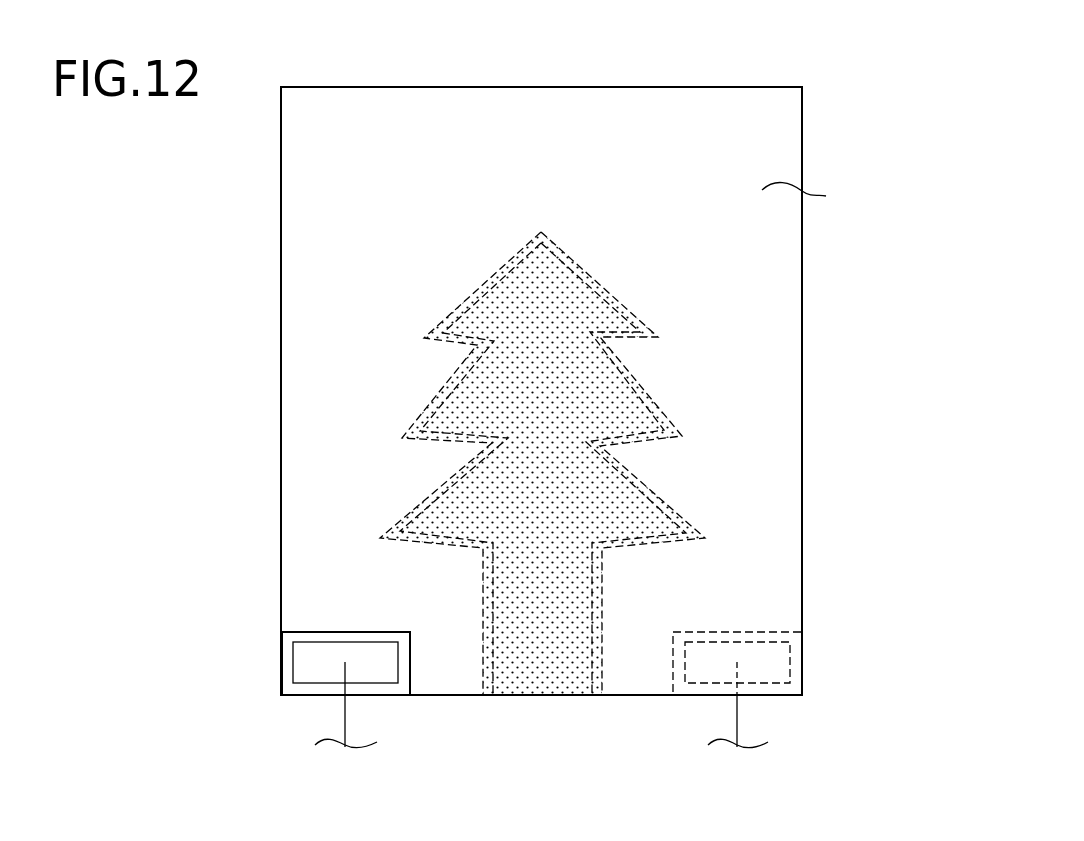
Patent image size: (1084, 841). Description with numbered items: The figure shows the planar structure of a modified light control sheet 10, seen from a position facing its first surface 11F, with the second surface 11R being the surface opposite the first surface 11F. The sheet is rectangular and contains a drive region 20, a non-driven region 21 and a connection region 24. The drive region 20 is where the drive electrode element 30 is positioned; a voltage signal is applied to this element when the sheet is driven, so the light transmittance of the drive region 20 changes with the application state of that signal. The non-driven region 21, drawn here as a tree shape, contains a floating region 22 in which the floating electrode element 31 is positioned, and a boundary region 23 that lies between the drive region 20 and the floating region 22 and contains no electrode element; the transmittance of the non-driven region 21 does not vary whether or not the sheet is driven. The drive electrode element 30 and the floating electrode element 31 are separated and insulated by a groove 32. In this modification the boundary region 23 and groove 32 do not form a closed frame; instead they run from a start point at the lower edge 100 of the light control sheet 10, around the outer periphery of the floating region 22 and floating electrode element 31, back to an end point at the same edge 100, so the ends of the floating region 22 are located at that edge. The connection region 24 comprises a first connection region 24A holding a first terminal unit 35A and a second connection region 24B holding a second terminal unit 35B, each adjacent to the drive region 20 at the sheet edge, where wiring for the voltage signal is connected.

The light control sheet 10 is at (804, 132).
The first surface 11F is at (821, 193).
The second surface 11R is at (804, 273).
The drive region 20 is at (305, 204).
The non-driven region 21 is at (398, 562).
The floating region 22 is at (465, 553).
The boundary region 23 is at (480, 598).
The connection region 24 is at (543, 690).
The first connection region 24A is at (803, 697).
The second connection region 24B is at (282, 692).
The drive electrode element 30 is at (305, 374).
The floating electrode element 31 is at (455, 440).
The groove 32 is at (415, 512).
The first terminal unit 35A is at (710, 667).
The second terminal unit 35B is at (373, 670).
The edge 100 is at (540, 697).